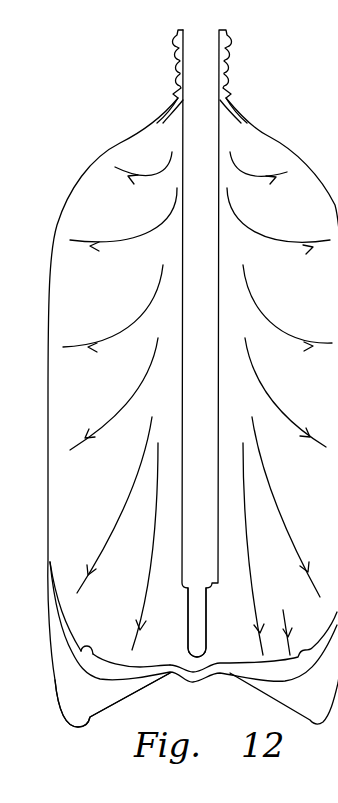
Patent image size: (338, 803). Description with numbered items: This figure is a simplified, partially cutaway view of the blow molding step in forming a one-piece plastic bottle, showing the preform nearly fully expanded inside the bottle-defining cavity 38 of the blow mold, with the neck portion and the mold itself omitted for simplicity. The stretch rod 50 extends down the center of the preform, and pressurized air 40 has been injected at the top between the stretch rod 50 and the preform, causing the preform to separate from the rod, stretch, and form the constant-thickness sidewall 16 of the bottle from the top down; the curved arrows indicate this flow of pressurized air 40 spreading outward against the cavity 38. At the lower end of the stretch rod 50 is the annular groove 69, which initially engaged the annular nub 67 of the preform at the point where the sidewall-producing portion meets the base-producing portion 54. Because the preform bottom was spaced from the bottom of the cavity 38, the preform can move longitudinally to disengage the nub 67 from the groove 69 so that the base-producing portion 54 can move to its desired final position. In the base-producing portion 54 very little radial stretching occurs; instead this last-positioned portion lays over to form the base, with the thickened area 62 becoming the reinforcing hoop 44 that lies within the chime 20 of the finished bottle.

The sidewall 16 is at (52, 272).
The chime 20 is at (73, 663).
The bottle-defining cavity 38 is at (75, 697).
The pressurized air 40 is at (128, 242).
The reinforcing hoop 44 is at (82, 652).
The stretch rod 50 is at (203, 107).
The base-producing portion 54 is at (285, 623).
The thickened area 62 is at (148, 662).
The annular nub 67 is at (92, 650).
The annular groove 69 is at (208, 588).